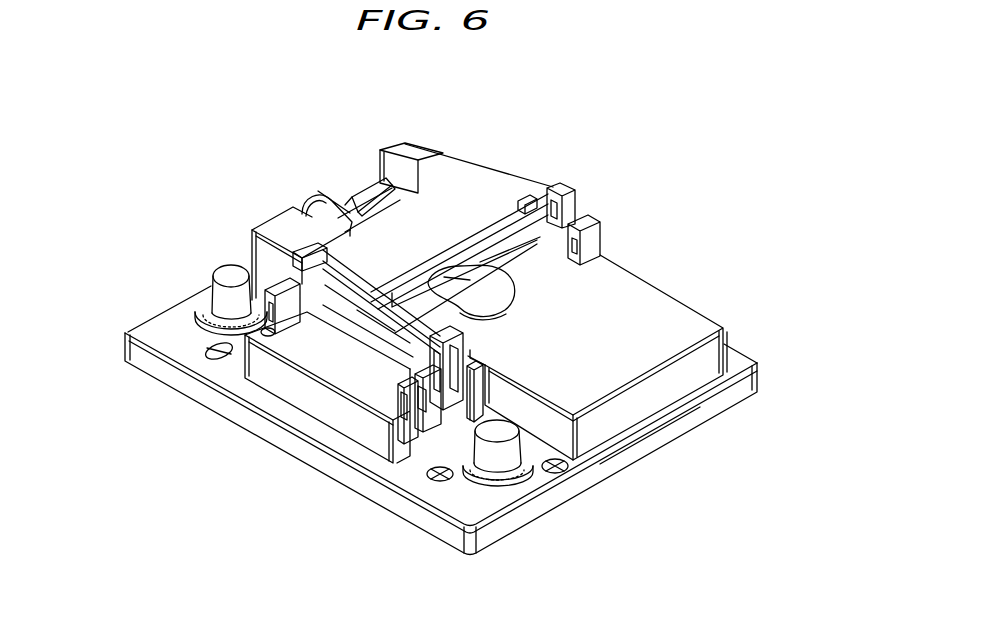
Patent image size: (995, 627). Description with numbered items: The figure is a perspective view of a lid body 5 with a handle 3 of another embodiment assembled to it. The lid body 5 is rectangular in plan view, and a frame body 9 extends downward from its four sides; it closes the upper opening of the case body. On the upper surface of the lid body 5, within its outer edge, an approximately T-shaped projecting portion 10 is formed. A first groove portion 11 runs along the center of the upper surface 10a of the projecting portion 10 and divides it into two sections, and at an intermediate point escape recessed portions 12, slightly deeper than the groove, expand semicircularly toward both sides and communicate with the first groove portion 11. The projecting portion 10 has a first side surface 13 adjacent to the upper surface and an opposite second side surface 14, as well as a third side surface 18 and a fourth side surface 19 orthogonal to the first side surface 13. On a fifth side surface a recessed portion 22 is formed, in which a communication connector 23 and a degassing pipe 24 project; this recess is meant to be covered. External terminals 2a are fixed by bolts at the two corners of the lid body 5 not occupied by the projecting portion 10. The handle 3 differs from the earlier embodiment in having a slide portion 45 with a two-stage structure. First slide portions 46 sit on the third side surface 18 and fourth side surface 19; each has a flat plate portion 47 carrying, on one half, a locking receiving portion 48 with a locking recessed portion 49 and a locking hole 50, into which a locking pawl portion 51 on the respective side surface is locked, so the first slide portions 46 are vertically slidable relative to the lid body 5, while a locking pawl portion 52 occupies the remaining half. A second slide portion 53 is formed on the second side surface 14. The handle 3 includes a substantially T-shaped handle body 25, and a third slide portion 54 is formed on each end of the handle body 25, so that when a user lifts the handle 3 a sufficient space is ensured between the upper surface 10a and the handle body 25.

The external terminal 2a is at (570, 470).
The handle 3 is at (565, 176).
The lid body 5 is at (720, 446).
The frame body 9 is at (667, 437).
The projecting portion 10 is at (645, 295).
The upper surface 10a is at (437, 188).
The first groove portion 11 is at (540, 255).
The escape recessed portion 12 is at (492, 306).
The first side surface 13 is at (350, 422).
The second side surface 14 is at (732, 333).
The third side surface 18 is at (525, 477).
The fourth side surface 19 is at (236, 365).
The recessed portion 22 is at (378, 162).
The communication connector 23 is at (388, 178).
The degassing pipe 24 is at (320, 200).
The handle body 25 is at (467, 232).
The slide portion 45 is at (280, 295).
The first slide portion 46 is at (393, 364).
The flat plate portion 47 is at (310, 313).
The locking receiving portion 48 is at (407, 577).
The locking recessed portion 49 is at (440, 418).
The locking hole 50 is at (400, 412).
The locking pawl portion 51 is at (455, 440).
The locking pawl portion 52 is at (488, 357).
The second slide portion 53 is at (590, 232).
The third slide portion 54 is at (548, 185).